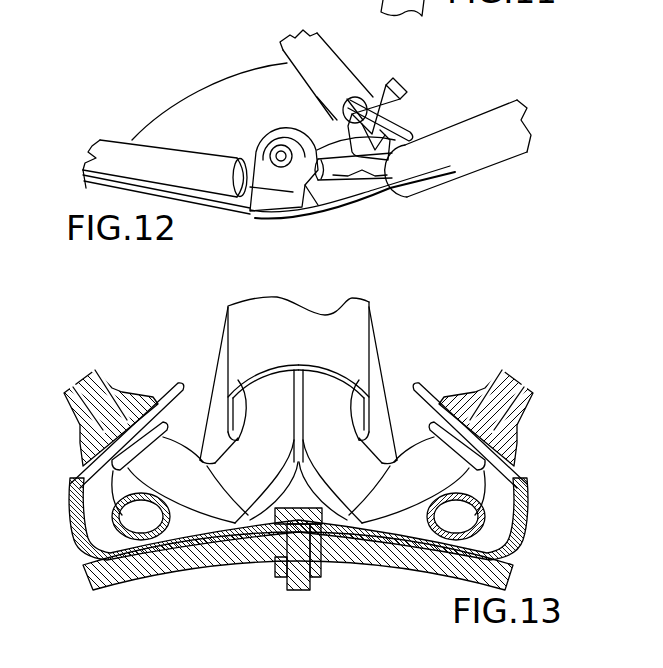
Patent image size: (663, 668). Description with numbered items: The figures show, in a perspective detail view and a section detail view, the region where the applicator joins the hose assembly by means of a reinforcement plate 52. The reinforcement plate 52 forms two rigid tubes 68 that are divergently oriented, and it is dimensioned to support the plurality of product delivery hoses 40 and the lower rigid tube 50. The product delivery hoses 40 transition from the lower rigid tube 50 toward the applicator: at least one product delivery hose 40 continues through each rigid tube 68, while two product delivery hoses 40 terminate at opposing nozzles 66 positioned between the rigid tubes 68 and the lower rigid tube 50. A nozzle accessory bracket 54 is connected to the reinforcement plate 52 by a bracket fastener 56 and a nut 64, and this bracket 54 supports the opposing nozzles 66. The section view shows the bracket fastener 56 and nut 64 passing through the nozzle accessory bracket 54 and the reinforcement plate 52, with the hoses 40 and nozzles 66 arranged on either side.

In FIG. 12, the product delivery hose 40 is at (333, 170).
In FIG. 13, the product delivery hose 40 is at (270, 400).
In FIG. 12, the lower rigid tube 50 is at (487, 150).
In FIG. 13, the lower rigid tube 50 is at (353, 332).
In FIG. 12, the reinforcement plate 52 is at (200, 122).
In FIG. 13, the reinforcement plate 52 is at (213, 557).
In FIG. 13, the nozzle accessory bracket 54 is at (77, 487).
In FIG. 13, the bracket fastener 56 is at (293, 587).
In FIG. 13, the nut 64 is at (283, 580).
In FIG. 12, the nozzle 66 is at (277, 147).
In FIG. 13, the nozzle 66 is at (120, 387).
In FIG. 12, the rigid tube 68 is at (313, 50).